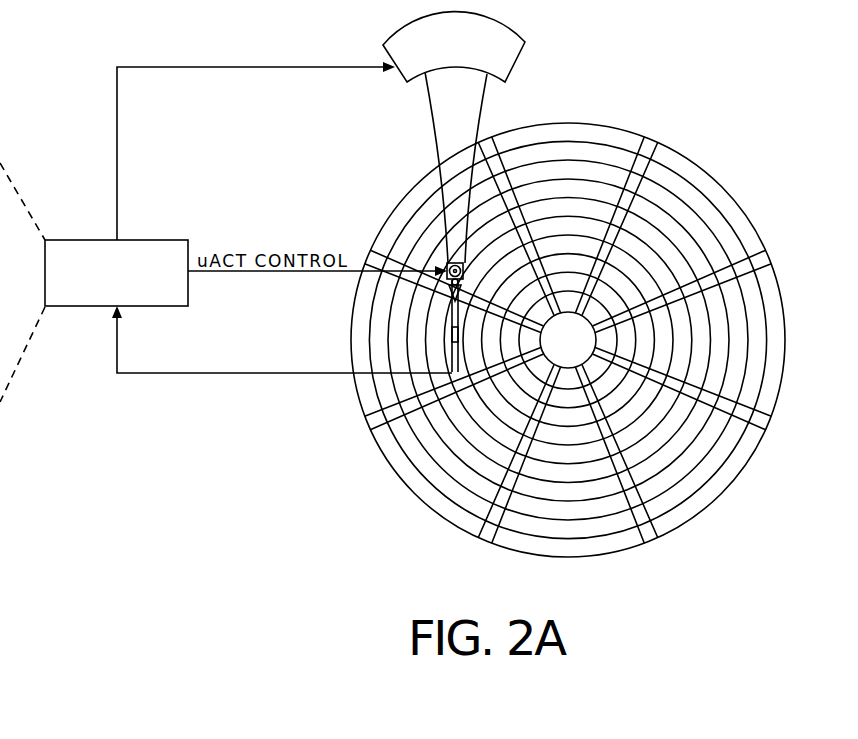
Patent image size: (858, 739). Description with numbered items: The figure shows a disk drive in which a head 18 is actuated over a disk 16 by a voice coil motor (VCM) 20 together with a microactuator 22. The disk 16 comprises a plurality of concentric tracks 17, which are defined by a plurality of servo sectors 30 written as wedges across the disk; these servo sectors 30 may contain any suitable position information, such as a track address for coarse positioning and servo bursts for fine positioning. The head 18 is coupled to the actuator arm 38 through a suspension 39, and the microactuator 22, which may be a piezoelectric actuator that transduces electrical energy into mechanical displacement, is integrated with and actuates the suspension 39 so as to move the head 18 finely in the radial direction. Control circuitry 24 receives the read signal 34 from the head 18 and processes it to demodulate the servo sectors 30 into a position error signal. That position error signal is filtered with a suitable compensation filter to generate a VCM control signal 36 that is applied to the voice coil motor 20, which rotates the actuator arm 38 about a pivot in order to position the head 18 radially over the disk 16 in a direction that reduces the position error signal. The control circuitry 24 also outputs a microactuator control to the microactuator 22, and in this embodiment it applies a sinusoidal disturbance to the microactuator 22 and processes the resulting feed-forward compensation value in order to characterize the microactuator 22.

The disk 16 is at (391, 493).
The tracks 17 is at (567, 155).
The head 18 is at (441, 344).
The voice coil motor (VCM) 20 is at (405, 80).
The microactuator 22 is at (477, 271).
The control circuitry 24 is at (155, 240).
The servo sectors 30 is at (578, 342).
The read signal 34 is at (247, 373).
The control signal 36 is at (117, 140).
The actuator arm 38 is at (437, 153).
The suspension 39 is at (440, 314).